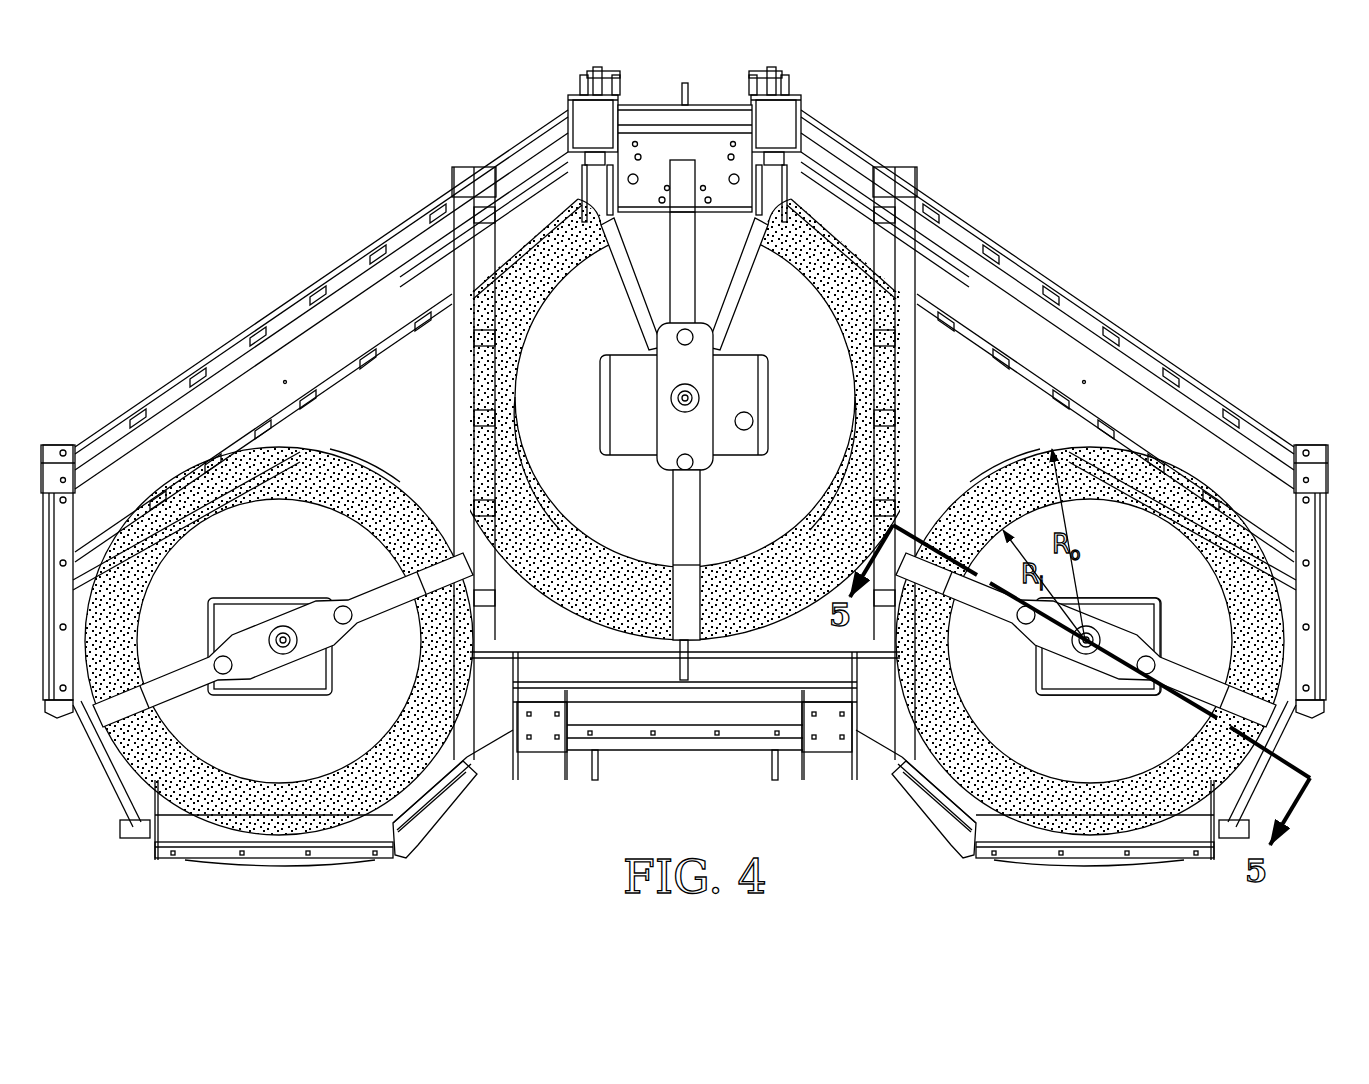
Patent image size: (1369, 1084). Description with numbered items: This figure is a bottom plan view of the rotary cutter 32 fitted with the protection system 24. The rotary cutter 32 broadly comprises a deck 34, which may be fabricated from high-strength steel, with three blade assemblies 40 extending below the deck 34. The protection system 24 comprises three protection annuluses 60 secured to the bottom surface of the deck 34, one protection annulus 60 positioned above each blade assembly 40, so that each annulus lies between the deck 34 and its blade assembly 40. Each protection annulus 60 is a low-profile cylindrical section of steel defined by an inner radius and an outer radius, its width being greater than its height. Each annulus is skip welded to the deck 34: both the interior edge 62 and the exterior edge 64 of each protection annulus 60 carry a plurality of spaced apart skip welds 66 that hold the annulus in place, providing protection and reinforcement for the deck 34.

The protection system 24 is at (703, 764).
The rotary cutter 32 is at (1128, 218).
The deck 34 is at (587, 637).
The blade assembly 40 is at (608, 347).
The protection annulus 60 is at (493, 347).
The interior edge 62 is at (293, 500).
The exterior edge 64 is at (390, 470).
The skip welds 66 is at (360, 468).